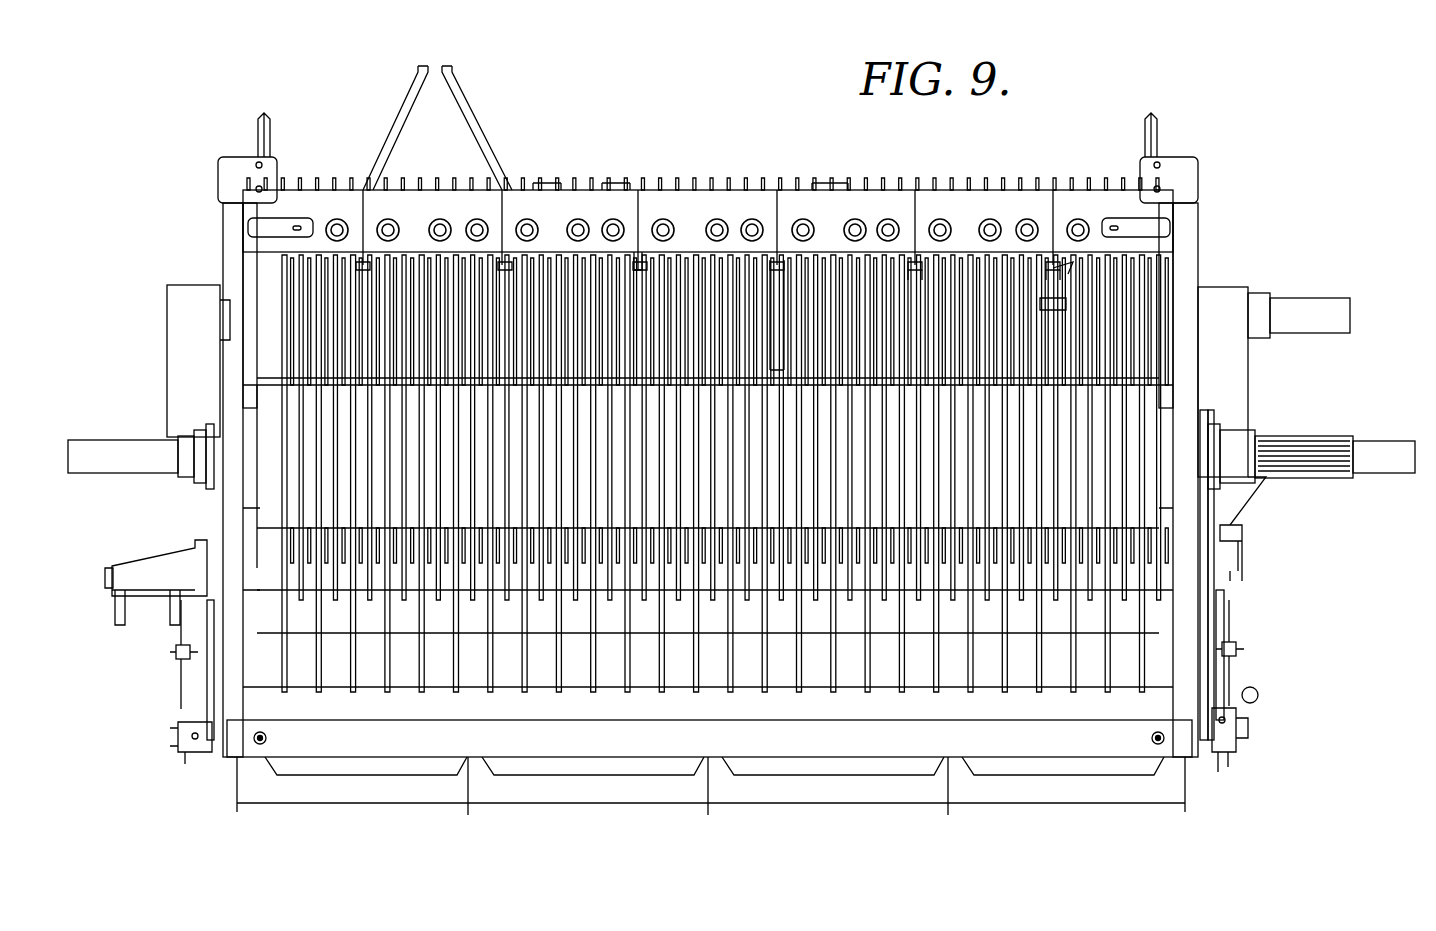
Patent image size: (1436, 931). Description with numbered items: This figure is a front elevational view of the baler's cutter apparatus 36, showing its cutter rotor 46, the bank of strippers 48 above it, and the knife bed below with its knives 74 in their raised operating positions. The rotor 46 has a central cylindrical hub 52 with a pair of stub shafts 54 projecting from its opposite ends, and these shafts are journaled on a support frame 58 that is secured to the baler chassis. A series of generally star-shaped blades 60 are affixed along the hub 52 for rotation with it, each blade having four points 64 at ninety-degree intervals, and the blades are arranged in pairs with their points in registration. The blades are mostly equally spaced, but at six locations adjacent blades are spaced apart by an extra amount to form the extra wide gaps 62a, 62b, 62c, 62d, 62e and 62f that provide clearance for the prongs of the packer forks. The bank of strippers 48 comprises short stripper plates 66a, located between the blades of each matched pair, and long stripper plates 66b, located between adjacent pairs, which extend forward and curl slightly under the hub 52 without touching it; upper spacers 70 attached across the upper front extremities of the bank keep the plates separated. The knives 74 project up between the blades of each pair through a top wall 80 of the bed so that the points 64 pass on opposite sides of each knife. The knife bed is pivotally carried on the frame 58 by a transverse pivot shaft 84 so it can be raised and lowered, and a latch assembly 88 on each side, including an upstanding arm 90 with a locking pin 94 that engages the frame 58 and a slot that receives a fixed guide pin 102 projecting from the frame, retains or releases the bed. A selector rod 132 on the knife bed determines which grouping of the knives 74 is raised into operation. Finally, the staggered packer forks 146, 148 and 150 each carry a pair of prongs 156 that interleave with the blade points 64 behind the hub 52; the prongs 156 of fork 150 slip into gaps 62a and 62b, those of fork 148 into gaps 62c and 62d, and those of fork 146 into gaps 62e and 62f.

The cutter apparatus 36 is at (1258, 130).
The cutter rotor 46 is at (250, 273).
The bank of strippers 48 is at (716, 176).
The central cylindrical hub 52 is at (282, 405).
The stub shafts 54 is at (105, 452).
The support frame 58 is at (1204, 245).
The star-shaped blades 60 is at (260, 596).
The extra wide gap 62a is at (365, 622).
The extra wide gap 62b is at (488, 622).
The extra wide gap 62c is at (636, 640).
The extra wide gap 62d is at (778, 640).
The extra wide gap 62e is at (914, 625).
The extra wide gap 62f is at (1050, 625).
The points 64 is at (268, 657).
The short stripper plates 66a is at (290, 352).
The long stripper plates 66b is at (295, 560).
The upper spacers 70 is at (625, 250).
The knives 74 is at (287, 678).
The top wall 80 is at (335, 708).
The transverse pivot shaft 84 is at (1226, 745).
The latch assembly 88 is at (118, 573).
The upstanding arms 90 is at (210, 672).
The locking pin 94 is at (1243, 552).
The fixed guide pin 102 is at (185, 655).
The selector rod 132 is at (1258, 700).
The fork 146 is at (1058, 298).
The fork 148 is at (780, 350).
The fork 150 is at (466, 118).
The prongs 156 is at (362, 262).